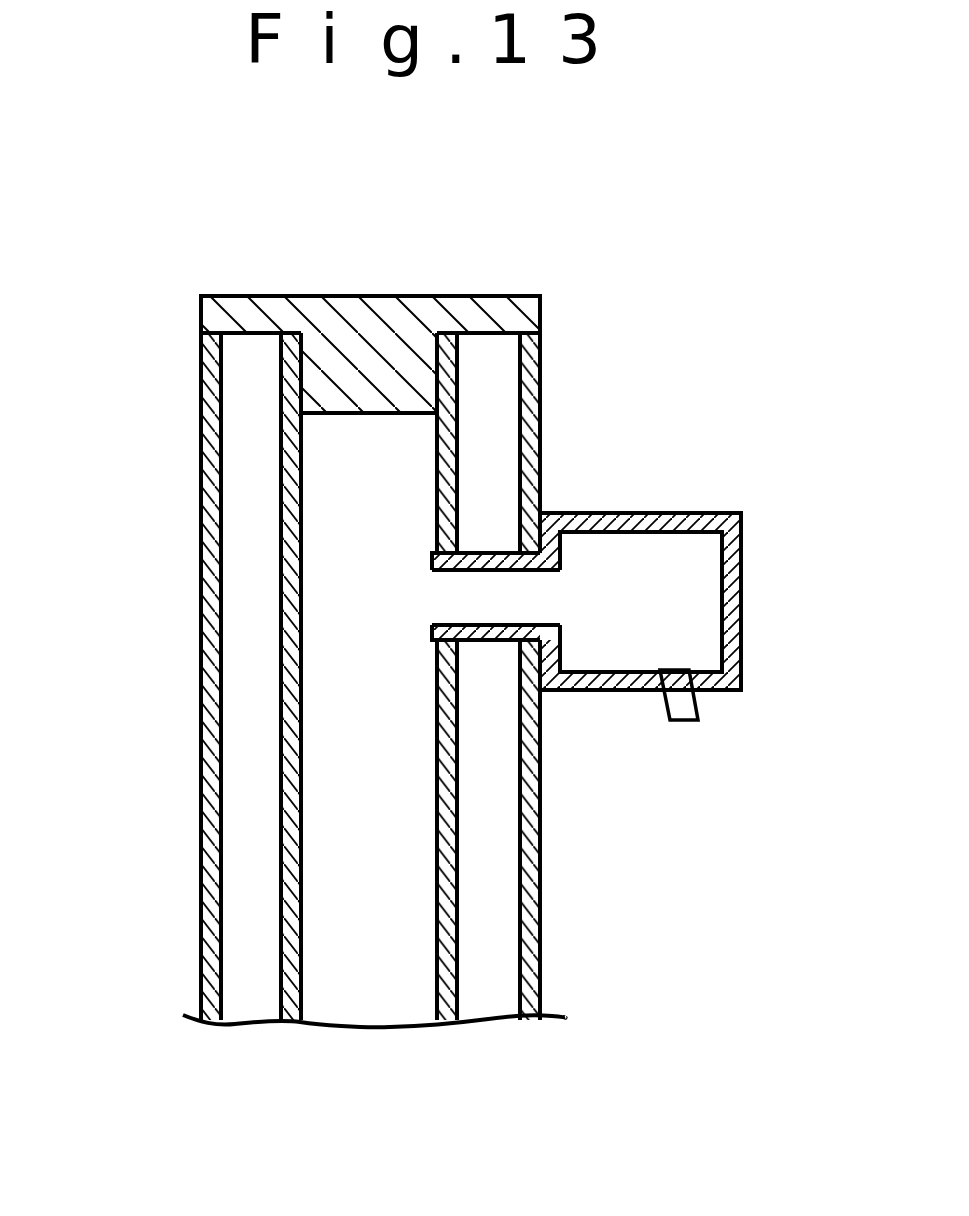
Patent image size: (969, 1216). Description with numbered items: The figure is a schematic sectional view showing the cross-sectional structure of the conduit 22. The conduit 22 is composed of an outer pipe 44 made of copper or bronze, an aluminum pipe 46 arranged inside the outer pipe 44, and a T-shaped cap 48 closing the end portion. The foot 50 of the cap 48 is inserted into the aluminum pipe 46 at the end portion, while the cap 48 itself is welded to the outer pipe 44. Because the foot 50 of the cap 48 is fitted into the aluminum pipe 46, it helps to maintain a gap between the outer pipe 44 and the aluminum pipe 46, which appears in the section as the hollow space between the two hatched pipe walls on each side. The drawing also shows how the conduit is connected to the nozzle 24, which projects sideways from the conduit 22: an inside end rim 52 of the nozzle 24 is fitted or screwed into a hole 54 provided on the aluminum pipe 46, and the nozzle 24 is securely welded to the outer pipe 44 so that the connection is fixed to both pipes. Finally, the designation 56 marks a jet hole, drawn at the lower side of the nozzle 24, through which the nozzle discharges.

The conduit 22 is at (189, 394).
The nozzle 24 is at (694, 511).
The outer pipe 44 is at (200, 927).
The aluminum pipe 46 is at (282, 478).
The T-shaped cap 48 is at (412, 313).
The foot 50 is at (332, 398).
The inside end rim 52 is at (432, 642).
The hole 54 is at (430, 587).
The jet hole 56 is at (699, 712).